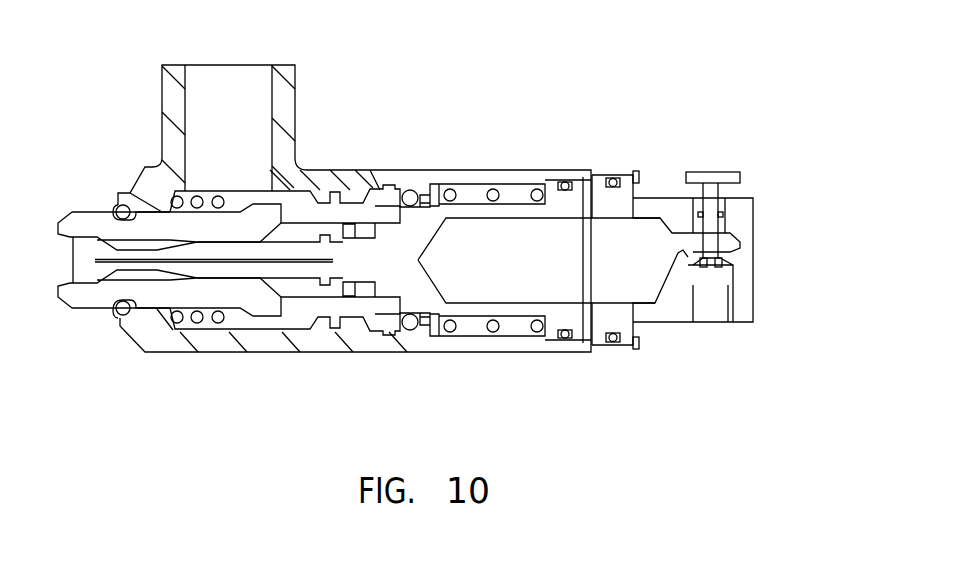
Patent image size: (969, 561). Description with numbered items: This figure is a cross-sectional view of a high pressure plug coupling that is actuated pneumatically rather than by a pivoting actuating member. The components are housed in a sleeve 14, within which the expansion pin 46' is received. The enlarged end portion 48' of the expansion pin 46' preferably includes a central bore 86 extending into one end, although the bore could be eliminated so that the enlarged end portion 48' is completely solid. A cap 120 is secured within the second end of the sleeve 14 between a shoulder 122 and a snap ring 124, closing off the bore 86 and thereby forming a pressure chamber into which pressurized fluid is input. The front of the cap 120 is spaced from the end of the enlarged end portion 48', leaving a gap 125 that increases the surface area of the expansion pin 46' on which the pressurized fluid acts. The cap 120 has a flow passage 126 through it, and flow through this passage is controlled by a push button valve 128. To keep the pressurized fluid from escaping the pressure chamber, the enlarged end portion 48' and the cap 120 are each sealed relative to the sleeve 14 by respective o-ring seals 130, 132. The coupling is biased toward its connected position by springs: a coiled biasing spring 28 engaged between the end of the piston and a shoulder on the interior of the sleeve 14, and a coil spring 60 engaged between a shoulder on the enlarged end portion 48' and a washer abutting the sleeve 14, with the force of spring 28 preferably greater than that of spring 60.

The sleeve 14 is at (550, 352).
The coiled biasing spring 28 is at (197, 323).
The expansion pin 46' is at (301, 154).
The enlarged end portion 48' is at (301, 349).
The coil spring 60 is at (451, 192).
The central bore 86 is at (496, 250).
The cap 120 is at (754, 258).
The shoulder 122 is at (594, 174).
The snap ring 124 is at (644, 180).
The gap 125 is at (589, 330).
The flow passage 126 is at (713, 302).
The push button valve 128 is at (716, 175).
The o-ring seal 130 is at (567, 181).
The o-ring seal 132 is at (617, 178).